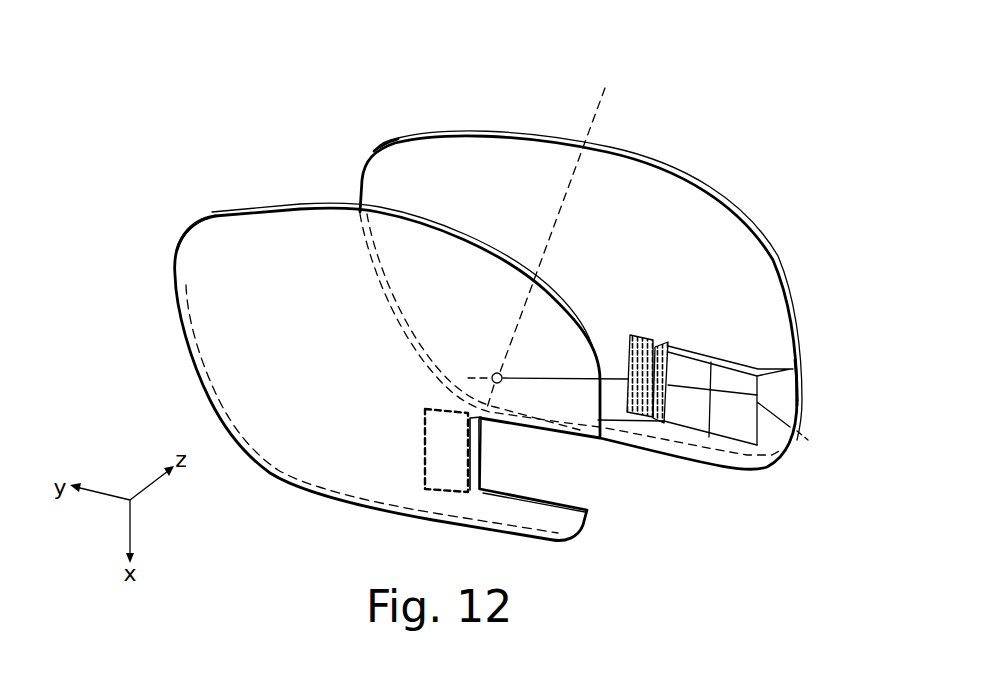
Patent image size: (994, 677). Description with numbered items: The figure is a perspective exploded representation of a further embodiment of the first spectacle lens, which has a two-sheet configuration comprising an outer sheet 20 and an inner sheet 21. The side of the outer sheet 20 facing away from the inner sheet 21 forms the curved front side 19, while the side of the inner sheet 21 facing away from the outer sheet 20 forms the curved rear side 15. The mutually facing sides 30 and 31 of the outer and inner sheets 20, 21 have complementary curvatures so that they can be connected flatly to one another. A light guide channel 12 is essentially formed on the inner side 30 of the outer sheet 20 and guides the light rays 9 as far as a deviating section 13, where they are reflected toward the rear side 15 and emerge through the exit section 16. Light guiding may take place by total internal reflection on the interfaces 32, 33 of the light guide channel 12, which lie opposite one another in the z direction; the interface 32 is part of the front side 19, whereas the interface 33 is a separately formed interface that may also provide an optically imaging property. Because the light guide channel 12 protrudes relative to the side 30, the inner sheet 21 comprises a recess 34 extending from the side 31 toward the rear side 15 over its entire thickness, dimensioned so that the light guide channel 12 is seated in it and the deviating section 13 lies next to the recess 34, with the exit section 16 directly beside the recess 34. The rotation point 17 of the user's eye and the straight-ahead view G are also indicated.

The light ray 9 is at (604, 377).
The light guide channel 12 is at (744, 359).
The deviating section 13 is at (648, 335).
The rear side 15 is at (243, 272).
The exit section 16 is at (426, 453).
The rotation point 17 is at (495, 373).
The front side 19 is at (483, 131).
The outer sheet 20 is at (370, 144).
The inner sheet 21 is at (205, 215).
The inner side of the outer sheet 30 is at (397, 188).
The side of the inner sheet 31 is at (263, 209).
The interface 32 is at (798, 401).
The interface 33 is at (744, 419).
The recess 34 is at (481, 452).
The straight-ahead view G is at (601, 106).